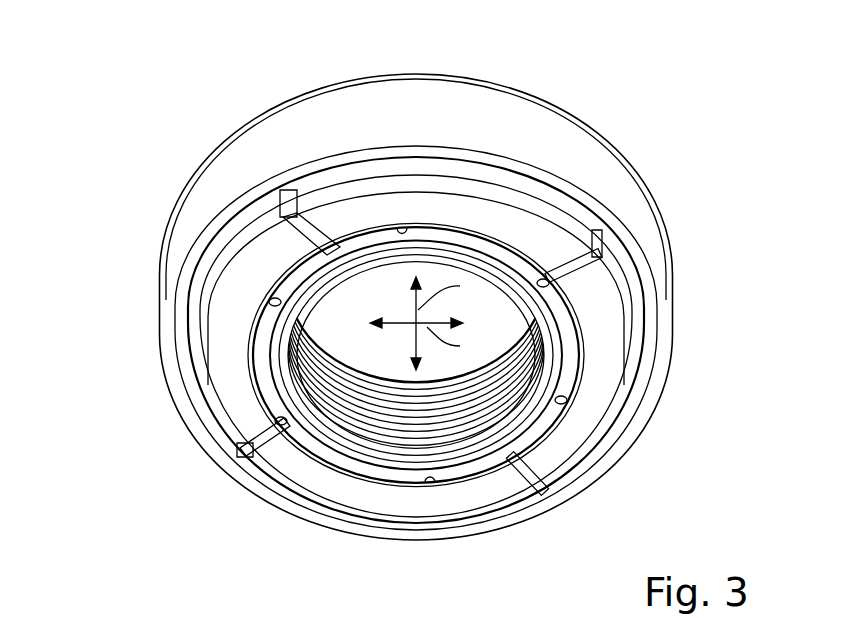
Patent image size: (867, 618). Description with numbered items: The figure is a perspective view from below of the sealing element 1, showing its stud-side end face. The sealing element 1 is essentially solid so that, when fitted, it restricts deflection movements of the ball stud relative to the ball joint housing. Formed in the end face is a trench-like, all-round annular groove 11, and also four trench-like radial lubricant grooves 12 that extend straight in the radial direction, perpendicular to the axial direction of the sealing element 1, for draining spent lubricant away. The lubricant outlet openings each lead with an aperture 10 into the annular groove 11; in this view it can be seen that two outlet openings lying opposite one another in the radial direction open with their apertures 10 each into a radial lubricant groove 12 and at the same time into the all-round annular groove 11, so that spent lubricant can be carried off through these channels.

The sealing element 1 is at (398, 284).
The aperture 10 is at (549, 285).
The annular groove 11 is at (567, 347).
The radial lubricant groove 12 is at (598, 275).